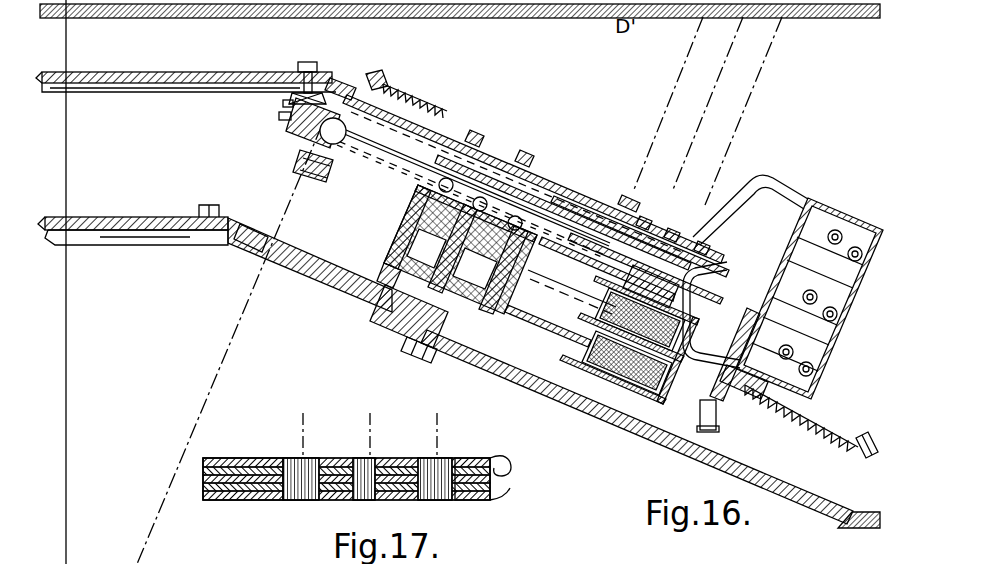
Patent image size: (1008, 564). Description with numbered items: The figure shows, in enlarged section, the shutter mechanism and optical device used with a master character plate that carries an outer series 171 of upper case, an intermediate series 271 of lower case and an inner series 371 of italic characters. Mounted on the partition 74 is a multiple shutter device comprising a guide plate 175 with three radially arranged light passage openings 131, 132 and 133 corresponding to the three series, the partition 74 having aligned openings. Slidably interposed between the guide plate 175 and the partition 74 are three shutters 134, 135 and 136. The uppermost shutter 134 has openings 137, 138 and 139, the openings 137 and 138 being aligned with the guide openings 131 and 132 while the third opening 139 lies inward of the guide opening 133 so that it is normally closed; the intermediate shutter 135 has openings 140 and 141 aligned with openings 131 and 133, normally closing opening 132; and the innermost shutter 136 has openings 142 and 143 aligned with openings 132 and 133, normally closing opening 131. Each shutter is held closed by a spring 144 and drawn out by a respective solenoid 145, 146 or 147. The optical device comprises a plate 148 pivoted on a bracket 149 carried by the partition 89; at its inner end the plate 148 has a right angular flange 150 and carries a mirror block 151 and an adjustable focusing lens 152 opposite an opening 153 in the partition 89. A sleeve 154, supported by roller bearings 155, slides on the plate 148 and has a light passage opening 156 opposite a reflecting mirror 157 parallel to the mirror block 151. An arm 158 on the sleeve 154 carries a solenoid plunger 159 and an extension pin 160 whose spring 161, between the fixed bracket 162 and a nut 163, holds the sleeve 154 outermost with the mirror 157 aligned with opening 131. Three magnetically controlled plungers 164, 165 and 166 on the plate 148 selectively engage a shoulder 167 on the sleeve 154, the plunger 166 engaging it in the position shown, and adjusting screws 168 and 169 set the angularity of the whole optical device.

In FIG. 16, the partition 74 is at (376, 74).
In FIG. 16, the partition 89 is at (327, 288).
In FIG. 16, the light passage opening 131 is at (702, 240).
In FIG. 17, the light passage opening 131 is at (470, 462).
In FIG. 16, the light passage opening 132 is at (674, 225).
In FIG. 17, the light passage opening 132 is at (376, 466).
In FIG. 16, the light passage opening 133 is at (645, 208).
In FIG. 16, the uppermost shutter 134 is at (565, 180).
In FIG. 17, the uppermost shutter 134 is at (505, 470).
In FIG. 16, the intermediate shutter 135 is at (530, 152).
In FIG. 17, the intermediate shutter 135 is at (510, 482).
In FIG. 16, the innermost shutter 136 is at (480, 138).
In FIG. 17, the innermost shutter 136 is at (505, 493).
In FIG. 17, the opening 137 is at (450, 458).
In FIG. 17, the opening 138 is at (372, 458).
In FIG. 17, the third opening 139 is at (258, 458).
In FIG. 17, the opening 140 is at (445, 500).
In FIG. 17, the opening 141 is at (320, 500).
In FIG. 17, the opening 142 is at (378, 500).
In FIG. 17, the opening 143 is at (290, 500).
In FIG. 16, the spring 144 is at (410, 95).
In FIG. 16, the solenoid 145 is at (806, 200).
In FIG. 16, the solenoid 146 is at (767, 266).
In FIG. 16, the solenoid 147 is at (772, 316).
In FIG. 16, the plate 148 is at (368, 160).
In FIG. 16, the bracket 149 is at (381, 307).
In FIG. 16, the right angular flange 150 is at (290, 128).
In FIG. 16, the mirror block 151 is at (334, 78).
In FIG. 16, the adjustable focusing lens 152 is at (305, 172).
In FIG. 16, the opening 153 is at (257, 262).
In FIG. 16, the sleeve 154 is at (523, 266).
In FIG. 16, the roller bearings 155 is at (437, 180).
In FIG. 16, the light passage opening 156 is at (725, 315).
In FIG. 16, the reflecting mirror 157 is at (604, 300).
In FIG. 16, the arm 158 is at (600, 318).
In FIG. 16, the solenoid plunger 159 is at (704, 373).
In FIG. 16, the extension pin 160 is at (808, 422).
In FIG. 16, the spring 161 is at (830, 436).
In FIG. 16, the bracket 162 is at (736, 414).
In FIG. 16, the nut 163 is at (868, 458).
In FIG. 16, the plunger 164 is at (412, 232).
In FIG. 16, the plunger 165 is at (412, 247).
In FIG. 16, the plunger 166 is at (500, 304).
In FIG. 16, the shoulder 167 is at (572, 158).
In FIG. 16, the adjusting screw 168 is at (675, 425).
In FIG. 16, the adjusting screw 169 is at (350, 80).
In FIG. 16, the outer series 171 is at (765, 109).
In FIG. 16, the guide plate 175 is at (628, 197).
In FIG. 16, the intermediate series 271 is at (727, 103).
In FIG. 16, the inner series 371 is at (688, 103).